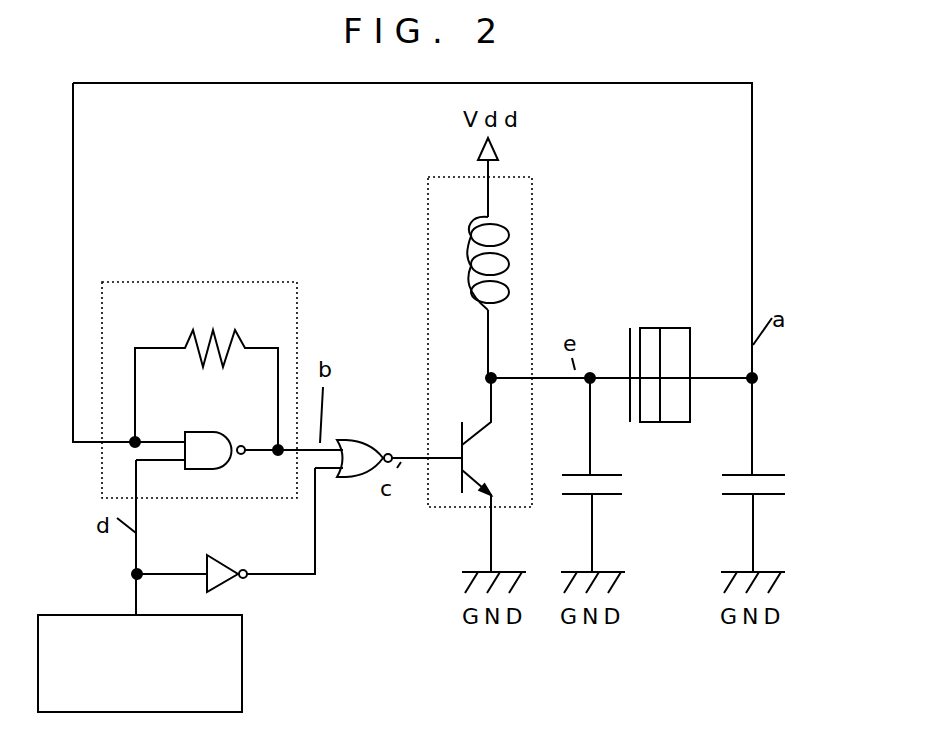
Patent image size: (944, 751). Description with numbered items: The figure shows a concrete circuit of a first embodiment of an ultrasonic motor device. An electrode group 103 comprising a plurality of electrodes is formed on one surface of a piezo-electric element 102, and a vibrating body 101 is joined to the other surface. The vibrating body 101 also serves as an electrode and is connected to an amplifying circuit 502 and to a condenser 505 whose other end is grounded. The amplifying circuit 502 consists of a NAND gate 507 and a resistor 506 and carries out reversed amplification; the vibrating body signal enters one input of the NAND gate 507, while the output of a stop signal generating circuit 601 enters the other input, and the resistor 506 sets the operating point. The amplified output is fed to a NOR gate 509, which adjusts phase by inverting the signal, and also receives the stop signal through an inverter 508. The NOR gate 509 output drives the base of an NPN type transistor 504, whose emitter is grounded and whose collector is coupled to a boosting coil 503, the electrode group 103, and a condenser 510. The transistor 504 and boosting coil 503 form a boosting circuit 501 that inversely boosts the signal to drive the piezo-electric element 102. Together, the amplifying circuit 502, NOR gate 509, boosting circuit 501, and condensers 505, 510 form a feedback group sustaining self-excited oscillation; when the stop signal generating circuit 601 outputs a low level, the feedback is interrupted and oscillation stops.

The vibrating body 101 is at (680, 327).
The piezo-electric element 102 is at (648, 328).
The electrode group 103 is at (628, 345).
The boosting circuit 501 is at (452, 177).
The amplifying circuit 502 is at (158, 281).
The boosting coil 503 is at (528, 263).
The NPN type transistor 504 is at (457, 433).
The condenser 505 is at (782, 523).
The resistor 506 is at (206, 373).
The NAND gate 507 is at (223, 413).
The inverter 508 is at (232, 549).
The NOR gate 509 is at (368, 430).
The condenser 510 is at (621, 523).
The stop signal generating circuit 601 is at (242, 677).